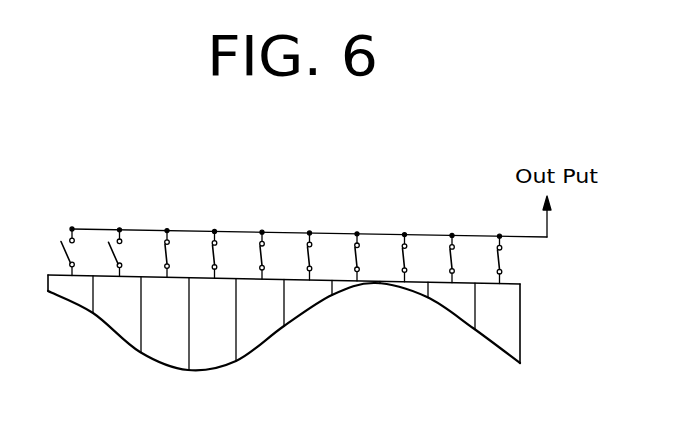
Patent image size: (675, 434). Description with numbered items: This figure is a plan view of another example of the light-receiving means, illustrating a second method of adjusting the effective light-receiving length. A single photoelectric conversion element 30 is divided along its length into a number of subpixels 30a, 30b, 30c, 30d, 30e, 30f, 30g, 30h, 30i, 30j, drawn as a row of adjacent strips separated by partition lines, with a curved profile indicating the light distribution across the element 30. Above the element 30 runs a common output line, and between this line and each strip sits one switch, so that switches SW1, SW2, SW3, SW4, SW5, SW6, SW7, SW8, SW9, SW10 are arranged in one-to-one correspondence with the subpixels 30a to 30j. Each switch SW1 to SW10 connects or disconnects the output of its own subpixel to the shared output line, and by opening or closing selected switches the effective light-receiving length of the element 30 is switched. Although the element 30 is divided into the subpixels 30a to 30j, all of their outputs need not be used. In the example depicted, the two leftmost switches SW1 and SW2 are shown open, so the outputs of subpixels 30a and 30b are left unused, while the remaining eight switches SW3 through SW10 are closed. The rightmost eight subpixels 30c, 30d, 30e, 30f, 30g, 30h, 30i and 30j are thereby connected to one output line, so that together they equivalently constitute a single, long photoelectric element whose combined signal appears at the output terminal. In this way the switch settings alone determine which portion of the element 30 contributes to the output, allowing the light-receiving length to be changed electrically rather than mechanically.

The photoelectric conversion element 30 is at (530, 348).
The subpixel 30a is at (66, 299).
The subpixel 30b is at (112, 332).
The subpixel 30c is at (157, 356).
The subpixel 30d is at (213, 362).
The subpixel 30e is at (262, 336).
The subpixel 30f is at (308, 304).
The subpixel 30g is at (347, 289).
The subpixel 30h is at (413, 294).
The subpixel 30i is at (448, 312).
The subpixel 30j is at (493, 339).
The switch SW1 is at (86, 251).
The switch SW2 is at (134, 252).
The switch SW3 is at (185, 253).
The switch SW4 is at (232, 253).
The switch SW5 is at (280, 254).
The switch SW6 is at (327, 255).
The switch SW7 is at (375, 256).
The switch SW8 is at (422, 257).
The switch SW9 is at (454, 261).
The switch SW10 is at (502, 262).